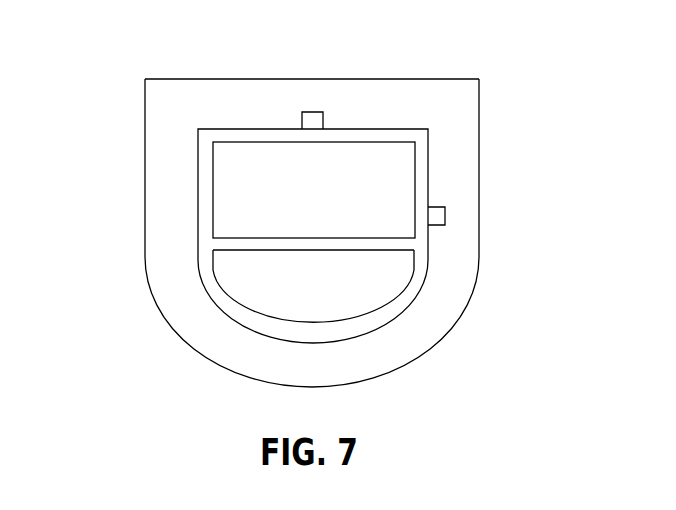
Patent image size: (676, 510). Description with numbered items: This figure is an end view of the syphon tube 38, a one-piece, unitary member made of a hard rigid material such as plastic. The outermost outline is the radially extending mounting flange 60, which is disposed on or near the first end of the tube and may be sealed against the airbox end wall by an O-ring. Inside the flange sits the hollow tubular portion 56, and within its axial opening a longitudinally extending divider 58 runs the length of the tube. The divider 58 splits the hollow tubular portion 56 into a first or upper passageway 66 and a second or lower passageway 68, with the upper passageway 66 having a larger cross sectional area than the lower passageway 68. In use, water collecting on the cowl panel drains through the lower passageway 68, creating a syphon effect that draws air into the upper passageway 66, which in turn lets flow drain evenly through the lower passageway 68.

The syphon tube 38 is at (93, 126).
The hollow tubular portion 56 is at (422, 127).
The longitudinally extending divider 58 is at (328, 254).
The radially extending mounting flange 60 is at (382, 79).
The upper passageway 66 is at (392, 191).
The lower passageway 68 is at (369, 287).